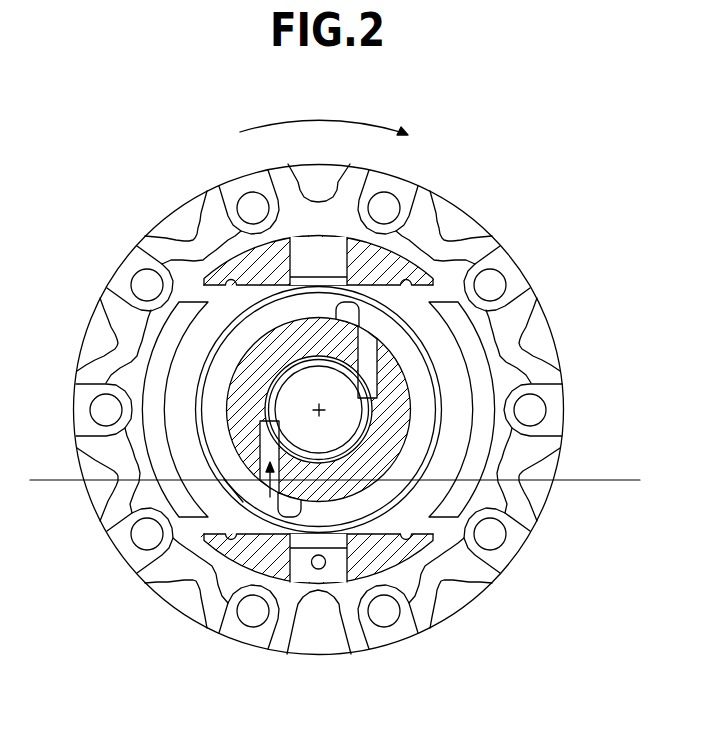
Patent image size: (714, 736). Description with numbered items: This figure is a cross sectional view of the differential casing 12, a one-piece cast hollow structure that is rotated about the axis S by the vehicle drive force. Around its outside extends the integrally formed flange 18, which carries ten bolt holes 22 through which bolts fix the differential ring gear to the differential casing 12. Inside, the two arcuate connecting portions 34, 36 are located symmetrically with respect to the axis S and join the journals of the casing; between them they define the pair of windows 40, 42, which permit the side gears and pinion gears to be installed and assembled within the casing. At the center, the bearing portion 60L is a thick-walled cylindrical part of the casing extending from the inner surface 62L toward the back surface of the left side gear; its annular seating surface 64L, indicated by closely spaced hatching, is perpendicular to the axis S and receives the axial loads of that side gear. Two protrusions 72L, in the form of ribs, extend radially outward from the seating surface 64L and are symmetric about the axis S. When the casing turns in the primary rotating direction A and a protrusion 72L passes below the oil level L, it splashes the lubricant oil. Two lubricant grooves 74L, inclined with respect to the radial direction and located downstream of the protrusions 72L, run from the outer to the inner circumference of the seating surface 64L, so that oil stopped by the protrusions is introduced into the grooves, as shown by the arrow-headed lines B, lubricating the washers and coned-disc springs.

The differential casing 12 is at (514, 203).
The flange 18 is at (457, 590).
The bolt holes 22 is at (497, 288).
The connecting portion 34 is at (257, 260).
The connecting portion 36 is at (377, 562).
The window 40 is at (207, 548).
The window 42 is at (445, 283).
The bearing portion 60L is at (260, 382).
The inner surface 62L is at (217, 380).
The annular seating surface 64L is at (395, 412).
The protrusion 72L is at (343, 304).
The lubricant groove 74L is at (258, 447).
The primary rotating direction A is at (324, 113).
The arrow-headed lines B is at (249, 494).
The axis S is at (313, 404).
The oil level L is at (607, 480).